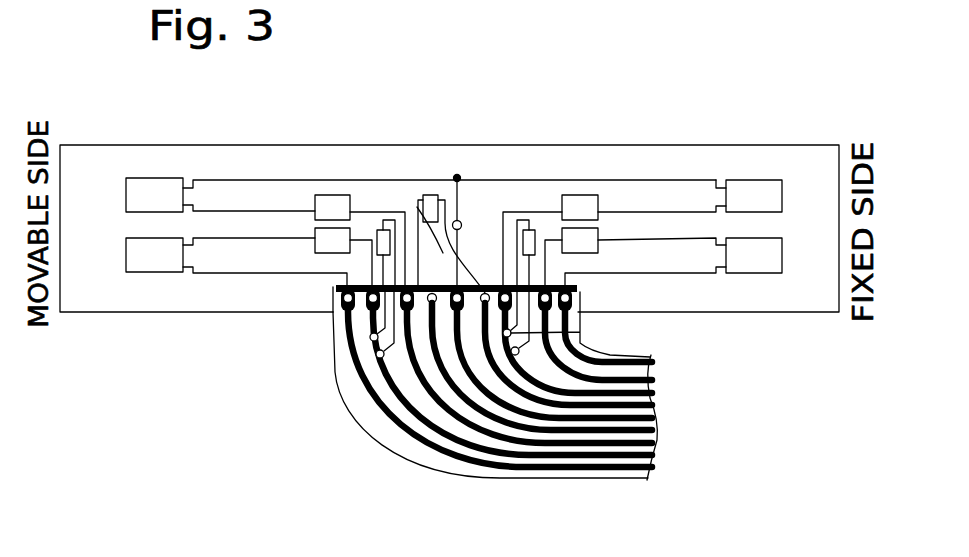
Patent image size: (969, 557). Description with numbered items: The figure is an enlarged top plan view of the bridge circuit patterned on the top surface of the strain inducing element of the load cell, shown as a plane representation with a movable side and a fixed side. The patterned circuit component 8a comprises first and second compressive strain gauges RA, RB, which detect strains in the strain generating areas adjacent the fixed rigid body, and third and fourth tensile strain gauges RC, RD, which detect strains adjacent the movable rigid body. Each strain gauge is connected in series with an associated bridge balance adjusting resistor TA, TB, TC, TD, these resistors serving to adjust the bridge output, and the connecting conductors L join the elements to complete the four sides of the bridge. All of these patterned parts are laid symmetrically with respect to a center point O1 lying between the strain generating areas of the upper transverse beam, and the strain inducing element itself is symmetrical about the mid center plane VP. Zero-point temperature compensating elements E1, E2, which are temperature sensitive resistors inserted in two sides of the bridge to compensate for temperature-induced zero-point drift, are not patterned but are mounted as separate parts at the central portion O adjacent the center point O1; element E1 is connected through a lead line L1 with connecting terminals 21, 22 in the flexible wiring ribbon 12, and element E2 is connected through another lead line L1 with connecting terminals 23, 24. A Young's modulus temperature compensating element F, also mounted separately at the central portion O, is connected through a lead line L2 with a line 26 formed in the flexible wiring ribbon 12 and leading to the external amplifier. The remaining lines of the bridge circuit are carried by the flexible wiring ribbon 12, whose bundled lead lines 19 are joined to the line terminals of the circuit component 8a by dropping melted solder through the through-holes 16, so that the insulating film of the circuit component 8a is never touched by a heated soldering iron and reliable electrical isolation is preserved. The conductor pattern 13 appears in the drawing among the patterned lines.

The circuit component 8a is at (770, 293).
The flexible wiring ribbon 12 is at (378, 413).
The conductor pattern 13 is at (409, 286).
The through-holes 16 is at (335, 300).
The lead lines 19 is at (403, 430).
The connecting terminal 21 is at (370, 339).
The connecting terminal 22 is at (377, 357).
The connecting terminal 23 is at (580, 332).
The connecting terminal 24 is at (519, 350).
The line 26 is at (500, 368).
The connecting conductors L is at (227, 273).
The lead line L1 is at (705, 130).
The lead line L2 is at (459, 213).
The zero-point temperature compensating element E1 is at (383, 228).
The zero-point temperature compensating element E2 is at (531, 228).
The central portion O is at (432, 293).
The center point O1 is at (462, 224).
The Young's modulus temperature compensating element F is at (431, 195).
The mid center plane VP is at (457, 178).
The first compressive strain gauge RA is at (236, 263).
The second compressive strain gauge RB is at (421, 195).
The third tensile strain gauge RC is at (673, 263).
The fourth tensile strain gauge RD is at (690, 197).
The bridge balance adjusting resistor TA is at (343, 258).
The bridge balance adjusting resistor TB is at (360, 241).
The bridge balance adjusting resistor TC is at (571, 258).
The bridge balance adjusting resistor TD is at (550, 241).